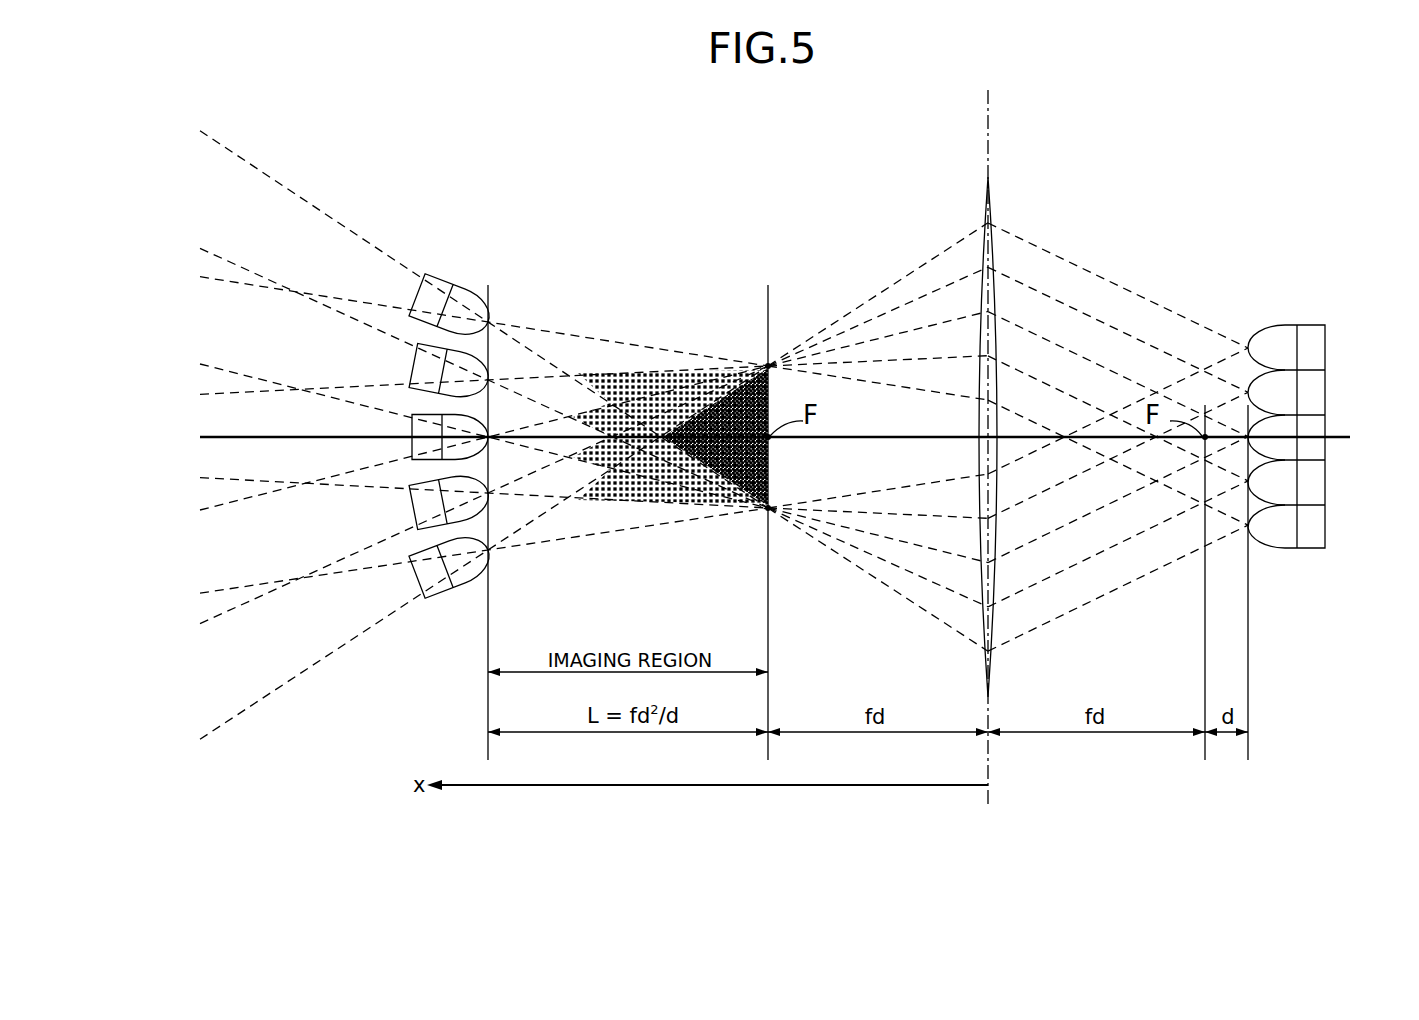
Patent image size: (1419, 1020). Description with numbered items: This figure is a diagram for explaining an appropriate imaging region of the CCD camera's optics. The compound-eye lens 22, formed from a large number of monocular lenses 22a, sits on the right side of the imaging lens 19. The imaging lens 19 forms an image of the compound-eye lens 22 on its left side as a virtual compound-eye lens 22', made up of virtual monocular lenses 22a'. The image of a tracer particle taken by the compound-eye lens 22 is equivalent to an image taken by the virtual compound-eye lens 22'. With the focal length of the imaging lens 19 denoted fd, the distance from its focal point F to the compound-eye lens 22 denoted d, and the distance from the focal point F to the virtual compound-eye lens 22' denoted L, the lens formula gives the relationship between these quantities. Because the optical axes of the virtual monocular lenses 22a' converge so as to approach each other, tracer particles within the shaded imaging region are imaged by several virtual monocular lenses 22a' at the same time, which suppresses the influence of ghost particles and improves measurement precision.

The imaging lens 19 is at (980, 205).
The compound-eye lens 22 is at (1303, 384).
The virtual compound-eye lens 22' is at (511, 386).
The monocular lens 22a is at (1323, 436).
The virtual monocular lens 22a' is at (511, 436).